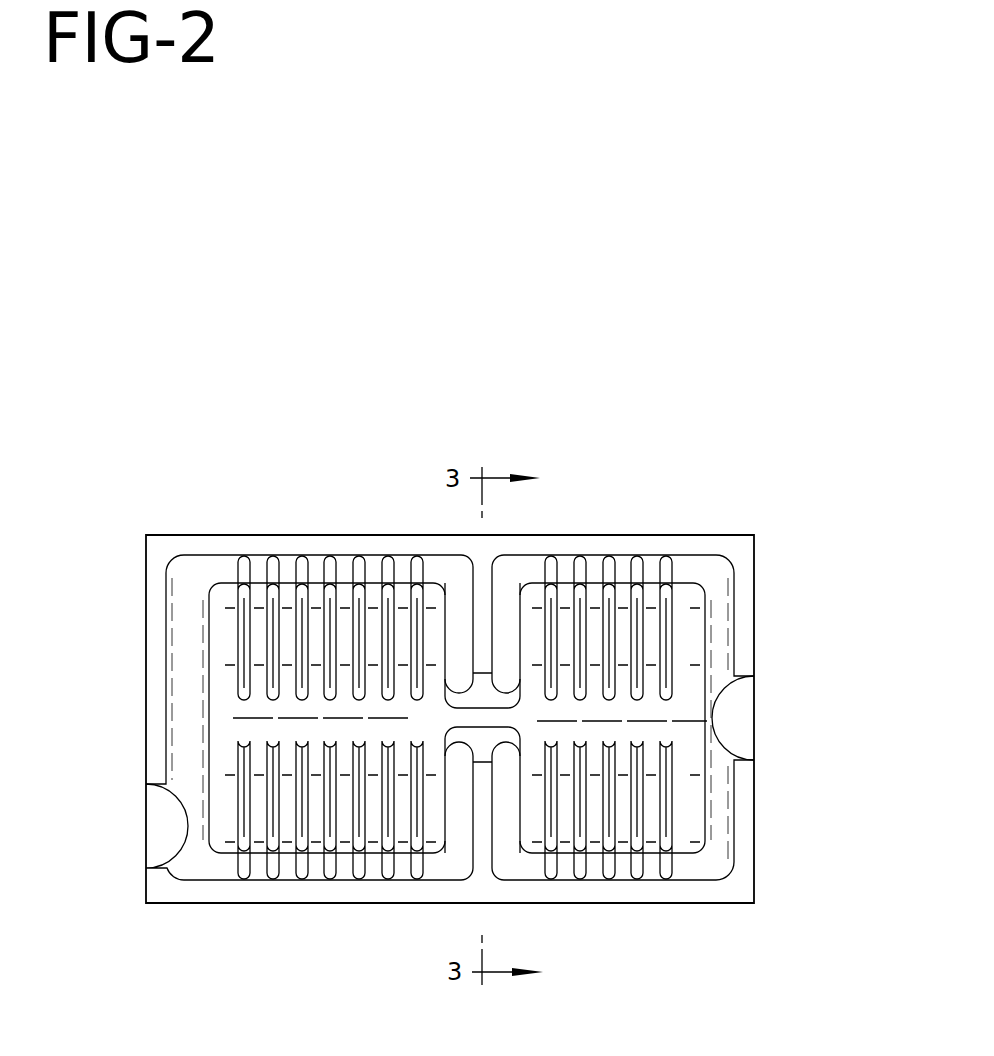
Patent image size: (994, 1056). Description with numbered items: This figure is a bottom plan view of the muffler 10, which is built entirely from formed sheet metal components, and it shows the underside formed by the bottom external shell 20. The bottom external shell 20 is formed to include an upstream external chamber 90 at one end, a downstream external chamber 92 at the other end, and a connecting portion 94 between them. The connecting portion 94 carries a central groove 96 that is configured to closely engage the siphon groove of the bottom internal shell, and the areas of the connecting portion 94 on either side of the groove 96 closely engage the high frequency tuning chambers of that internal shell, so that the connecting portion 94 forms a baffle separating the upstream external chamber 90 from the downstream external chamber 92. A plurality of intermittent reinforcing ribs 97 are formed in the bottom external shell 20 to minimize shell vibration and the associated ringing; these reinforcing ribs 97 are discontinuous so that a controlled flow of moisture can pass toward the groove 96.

The muffler 10 is at (645, 297).
The bottom external shell 20 is at (622, 527).
The upstream external chamber 90 is at (222, 837).
The downstream external chamber 92 is at (692, 827).
The connecting portion 94 is at (483, 617).
The central groove 96 is at (455, 723).
The reinforcing ribs 97 is at (298, 610).